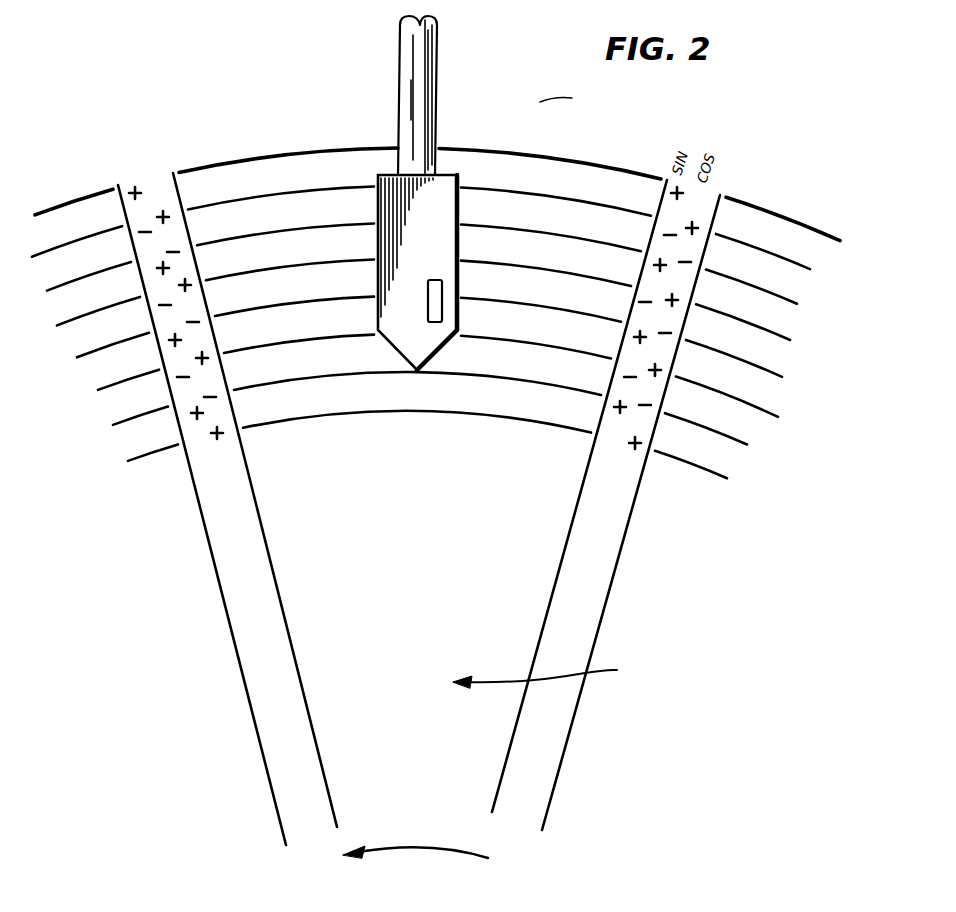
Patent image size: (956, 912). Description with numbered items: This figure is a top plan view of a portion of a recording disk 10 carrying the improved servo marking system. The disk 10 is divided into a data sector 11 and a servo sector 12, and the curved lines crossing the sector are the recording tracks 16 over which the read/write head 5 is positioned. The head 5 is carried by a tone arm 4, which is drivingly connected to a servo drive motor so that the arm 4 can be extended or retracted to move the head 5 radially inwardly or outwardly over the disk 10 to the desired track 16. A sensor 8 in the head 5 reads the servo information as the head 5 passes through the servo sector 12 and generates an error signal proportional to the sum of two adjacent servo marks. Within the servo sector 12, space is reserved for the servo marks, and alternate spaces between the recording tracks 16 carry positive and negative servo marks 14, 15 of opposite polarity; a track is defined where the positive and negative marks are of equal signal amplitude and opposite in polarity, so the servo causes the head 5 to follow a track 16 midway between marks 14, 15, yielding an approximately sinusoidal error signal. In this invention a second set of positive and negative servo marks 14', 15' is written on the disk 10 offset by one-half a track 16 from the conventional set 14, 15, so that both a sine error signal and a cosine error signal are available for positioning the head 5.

The tone arm 4 is at (417, 78).
The read/write head 5 is at (432, 233).
The sensor 8 is at (442, 302).
The recording disk 10 is at (646, 687).
The data sector 11 is at (313, 622).
The servo sector 12 is at (243, 575).
The positive servo mark 14 is at (406, 298).
The negative servo mark 15 is at (407, 321).
The offset positive servo mark 14' is at (453, 325).
The offset negative servo mark 15' is at (454, 339).
The recording track 16 is at (277, 233).